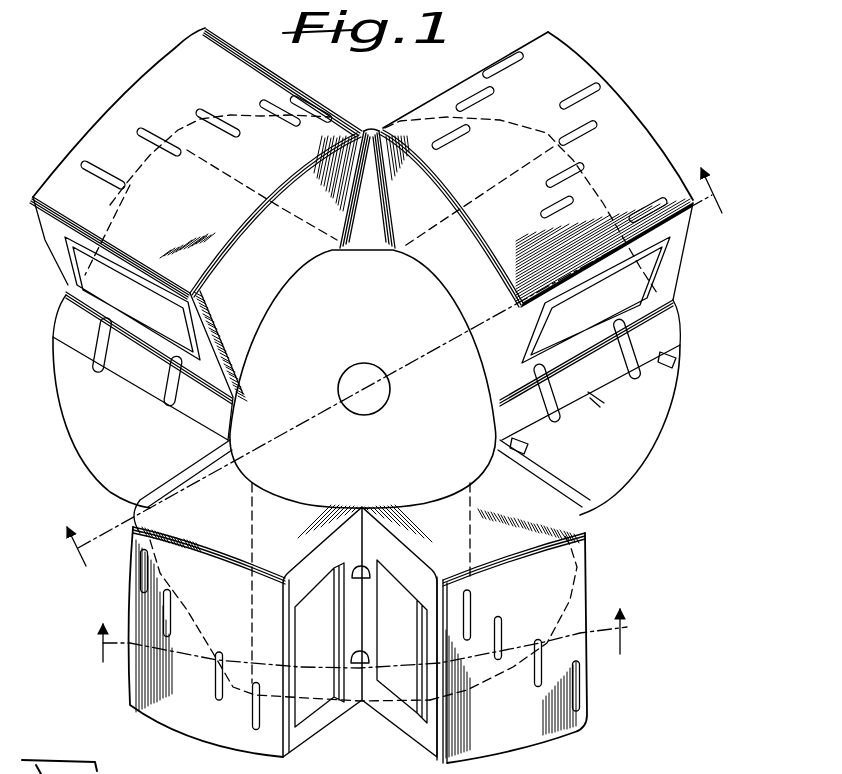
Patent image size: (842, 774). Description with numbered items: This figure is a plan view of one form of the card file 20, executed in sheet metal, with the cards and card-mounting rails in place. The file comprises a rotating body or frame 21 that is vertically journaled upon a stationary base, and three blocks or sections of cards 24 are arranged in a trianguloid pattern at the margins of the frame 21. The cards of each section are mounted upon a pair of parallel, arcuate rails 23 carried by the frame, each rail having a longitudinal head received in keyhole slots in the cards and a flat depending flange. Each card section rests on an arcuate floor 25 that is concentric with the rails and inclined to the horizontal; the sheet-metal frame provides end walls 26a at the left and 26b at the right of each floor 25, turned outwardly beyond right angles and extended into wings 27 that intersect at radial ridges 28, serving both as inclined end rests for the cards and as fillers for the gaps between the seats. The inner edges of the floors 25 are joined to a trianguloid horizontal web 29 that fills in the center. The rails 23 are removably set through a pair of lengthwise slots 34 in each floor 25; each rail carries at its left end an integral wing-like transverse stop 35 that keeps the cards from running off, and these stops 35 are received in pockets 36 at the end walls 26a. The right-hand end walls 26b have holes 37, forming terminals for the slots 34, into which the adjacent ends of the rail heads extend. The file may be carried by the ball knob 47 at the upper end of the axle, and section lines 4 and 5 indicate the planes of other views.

The section line 4- 4 is at (390, 372).
The section line 5- 5 is at (358, 638).
The card file 20 is at (373, 125).
The rotating body or frame 21 is at (673, 381).
The rails 23 is at (178, 381).
The cards 24 is at (128, 82).
The floor 25 is at (75, 318).
The end wall 26a is at (271, 100).
The end wall 26b is at (608, 590).
The wings 27 is at (113, 457).
The radial ridges 28 is at (150, 520).
The trianguloid horizontal web 29 is at (407, 445).
The slots 34 is at (178, 397).
The transverse stop 35 is at (676, 360).
The pockets 36 is at (600, 404).
The holes 37 is at (100, 350).
The ball knob 47 is at (378, 378).